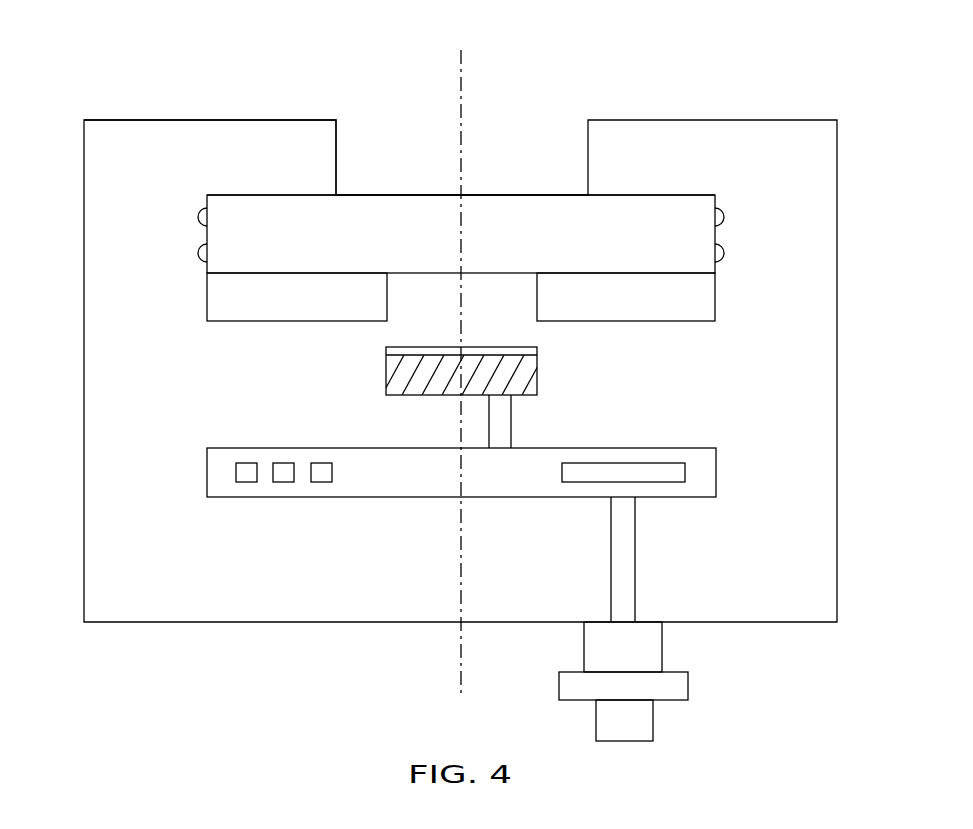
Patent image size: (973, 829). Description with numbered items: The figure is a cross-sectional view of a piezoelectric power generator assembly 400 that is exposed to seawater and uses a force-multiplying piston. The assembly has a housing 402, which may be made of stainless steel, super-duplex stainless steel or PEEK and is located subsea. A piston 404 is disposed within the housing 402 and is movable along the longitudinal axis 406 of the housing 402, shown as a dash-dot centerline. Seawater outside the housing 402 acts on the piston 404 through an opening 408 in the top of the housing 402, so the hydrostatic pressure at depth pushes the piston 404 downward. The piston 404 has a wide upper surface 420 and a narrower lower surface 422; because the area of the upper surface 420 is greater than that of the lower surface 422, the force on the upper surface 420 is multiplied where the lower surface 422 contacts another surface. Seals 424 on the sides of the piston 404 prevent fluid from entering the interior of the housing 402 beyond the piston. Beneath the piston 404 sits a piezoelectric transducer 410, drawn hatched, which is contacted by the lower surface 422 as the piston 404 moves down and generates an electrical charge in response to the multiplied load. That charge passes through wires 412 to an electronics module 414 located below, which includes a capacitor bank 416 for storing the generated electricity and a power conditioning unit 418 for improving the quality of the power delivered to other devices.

The piezoelectric power generator assembly 400 is at (720, 58).
The housing 402 is at (757, 387).
The piston 404 is at (667, 245).
The longitudinal axis 406 is at (462, 92).
The opening 408 is at (336, 157).
The piezoelectric transducer 410 is at (537, 361).
The wires 412 is at (511, 416).
The electronics module 414 is at (716, 473).
The capacitor bank 416 is at (266, 481).
The power conditioning unit 418 is at (584, 483).
The upper surface 420 is at (524, 195).
The lower surface 422 is at (409, 349).
The seals 424 is at (726, 218).